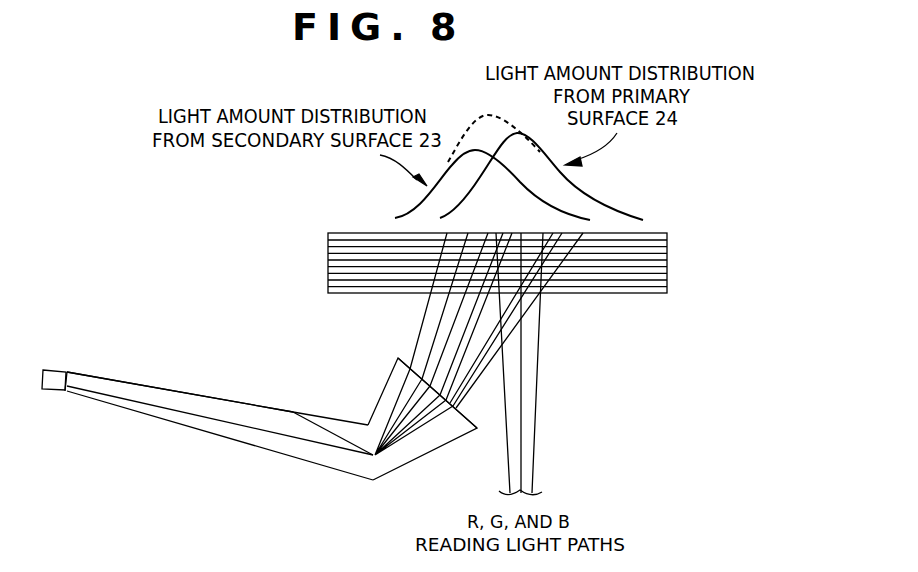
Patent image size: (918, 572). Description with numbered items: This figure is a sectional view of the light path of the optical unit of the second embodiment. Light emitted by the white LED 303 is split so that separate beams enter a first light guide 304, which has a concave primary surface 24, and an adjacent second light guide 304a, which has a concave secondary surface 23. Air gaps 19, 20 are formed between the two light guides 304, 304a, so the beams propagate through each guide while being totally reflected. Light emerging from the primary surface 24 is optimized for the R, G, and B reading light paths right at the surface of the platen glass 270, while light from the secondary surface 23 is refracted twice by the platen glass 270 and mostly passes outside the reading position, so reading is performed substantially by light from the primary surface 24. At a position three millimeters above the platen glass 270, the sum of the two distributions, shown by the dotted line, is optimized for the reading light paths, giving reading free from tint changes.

The platen glass 270 is at (340, 265).
The white LED 303 is at (53, 378).
The light guide (first light guide) 304 is at (317, 455).
The light guide (second light guide) 304a is at (173, 400).
The air gap 19 is at (237, 425).
The air gap 20 is at (388, 455).
The secondary surface 23 is at (397, 372).
The primary surface 24 is at (466, 406).